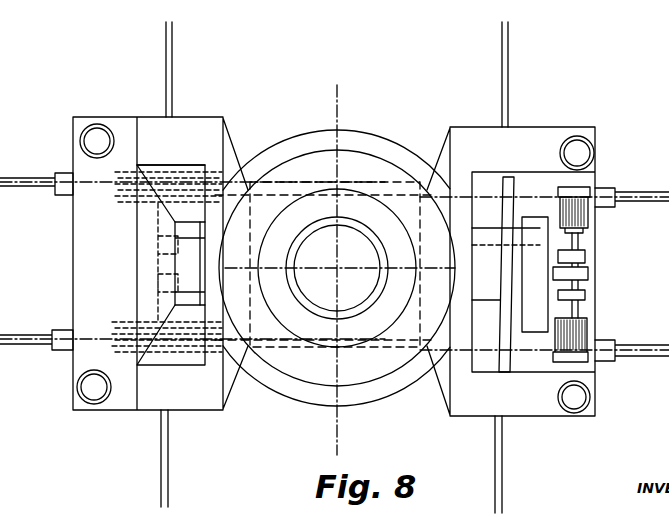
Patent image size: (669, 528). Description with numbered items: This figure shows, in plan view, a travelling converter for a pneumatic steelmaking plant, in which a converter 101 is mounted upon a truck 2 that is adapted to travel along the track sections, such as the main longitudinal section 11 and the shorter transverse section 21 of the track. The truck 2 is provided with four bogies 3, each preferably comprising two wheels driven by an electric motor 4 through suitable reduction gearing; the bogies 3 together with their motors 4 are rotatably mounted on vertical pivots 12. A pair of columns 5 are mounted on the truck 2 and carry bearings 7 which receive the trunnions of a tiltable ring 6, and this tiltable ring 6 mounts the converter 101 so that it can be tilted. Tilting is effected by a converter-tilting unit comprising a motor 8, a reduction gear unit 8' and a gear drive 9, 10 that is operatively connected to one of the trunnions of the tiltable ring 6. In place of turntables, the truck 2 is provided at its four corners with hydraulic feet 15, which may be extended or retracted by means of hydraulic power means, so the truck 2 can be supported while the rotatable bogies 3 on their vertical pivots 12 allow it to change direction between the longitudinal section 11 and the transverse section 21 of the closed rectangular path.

The truck 2 is at (213, 143).
The bogie 3 is at (153, 165).
The electric motor 4 is at (158, 284).
The column 5 is at (186, 166).
The tiltable ring 6 is at (355, 393).
The bearing 7 is at (180, 290).
The motor 8 is at (603, 187).
The reduction gear unit 8' is at (584, 251).
The gear drive 9 is at (505, 318).
The gear drive 10 is at (512, 250).
The main longitudinal section 11 is at (640, 345).
The vertical pivot 12 is at (178, 168).
The hydraulic foot 15 is at (88, 138).
The transverse section 21 is at (165, 478).
The converter 101 is at (363, 210).